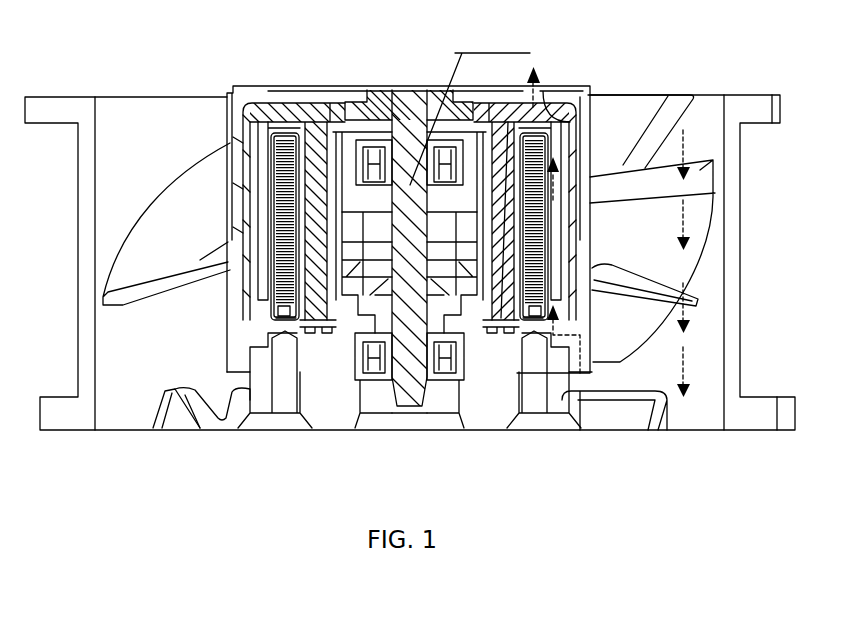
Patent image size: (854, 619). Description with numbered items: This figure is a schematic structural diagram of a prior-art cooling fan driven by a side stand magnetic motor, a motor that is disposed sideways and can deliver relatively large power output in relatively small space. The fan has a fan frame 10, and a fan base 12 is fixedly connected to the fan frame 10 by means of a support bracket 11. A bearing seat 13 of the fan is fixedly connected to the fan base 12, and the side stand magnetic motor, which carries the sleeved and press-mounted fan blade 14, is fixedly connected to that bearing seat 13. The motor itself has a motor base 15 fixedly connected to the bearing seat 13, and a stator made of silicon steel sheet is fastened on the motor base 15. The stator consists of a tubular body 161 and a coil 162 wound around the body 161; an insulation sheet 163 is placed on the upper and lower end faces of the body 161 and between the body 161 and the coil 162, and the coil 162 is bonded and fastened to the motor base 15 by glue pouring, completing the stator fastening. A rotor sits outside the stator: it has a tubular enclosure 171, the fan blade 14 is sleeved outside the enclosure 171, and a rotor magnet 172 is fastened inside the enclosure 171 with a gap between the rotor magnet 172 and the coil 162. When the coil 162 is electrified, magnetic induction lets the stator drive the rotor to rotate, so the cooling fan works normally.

The fan frame 10 is at (85, 335).
The support bracket 11 is at (162, 410).
The fan base 12 is at (190, 407).
The bearing seat 13 is at (262, 398).
The fan blade 14 is at (200, 212).
The motor base 15 is at (260, 362).
The tubular body 161 is at (283, 190).
The coil 162 is at (315, 170).
The insulation sheet 163 is at (273, 315).
The tubular enclosure 171 is at (245, 188).
The rotor magnet 172 is at (258, 177).